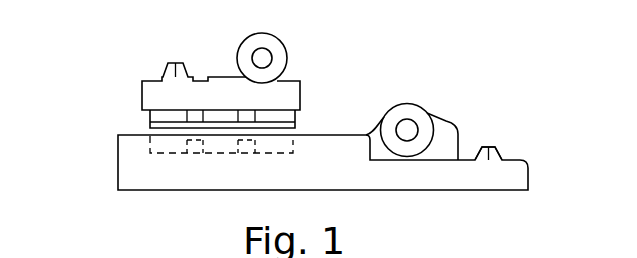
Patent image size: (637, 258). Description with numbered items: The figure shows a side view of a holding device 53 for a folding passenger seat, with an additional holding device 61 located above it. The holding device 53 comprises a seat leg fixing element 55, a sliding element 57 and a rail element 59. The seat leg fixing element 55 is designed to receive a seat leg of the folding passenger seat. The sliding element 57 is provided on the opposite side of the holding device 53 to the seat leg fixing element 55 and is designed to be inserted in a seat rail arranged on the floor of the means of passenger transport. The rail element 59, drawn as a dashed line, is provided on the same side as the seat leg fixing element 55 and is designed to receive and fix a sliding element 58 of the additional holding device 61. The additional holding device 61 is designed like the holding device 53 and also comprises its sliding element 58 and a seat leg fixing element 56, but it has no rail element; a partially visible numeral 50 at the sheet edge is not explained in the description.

The base assembly 53 is at (478, 99).
The roller housing 55 is at (404, 112).
The roller 56 is at (246, 45).
The base plate 57 is at (355, 182).
The connector block 58 is at (153, 115).
The hidden slot 59 is at (152, 143).
The carriage body 61 is at (303, 46).
The device 50 is at (188, 253).